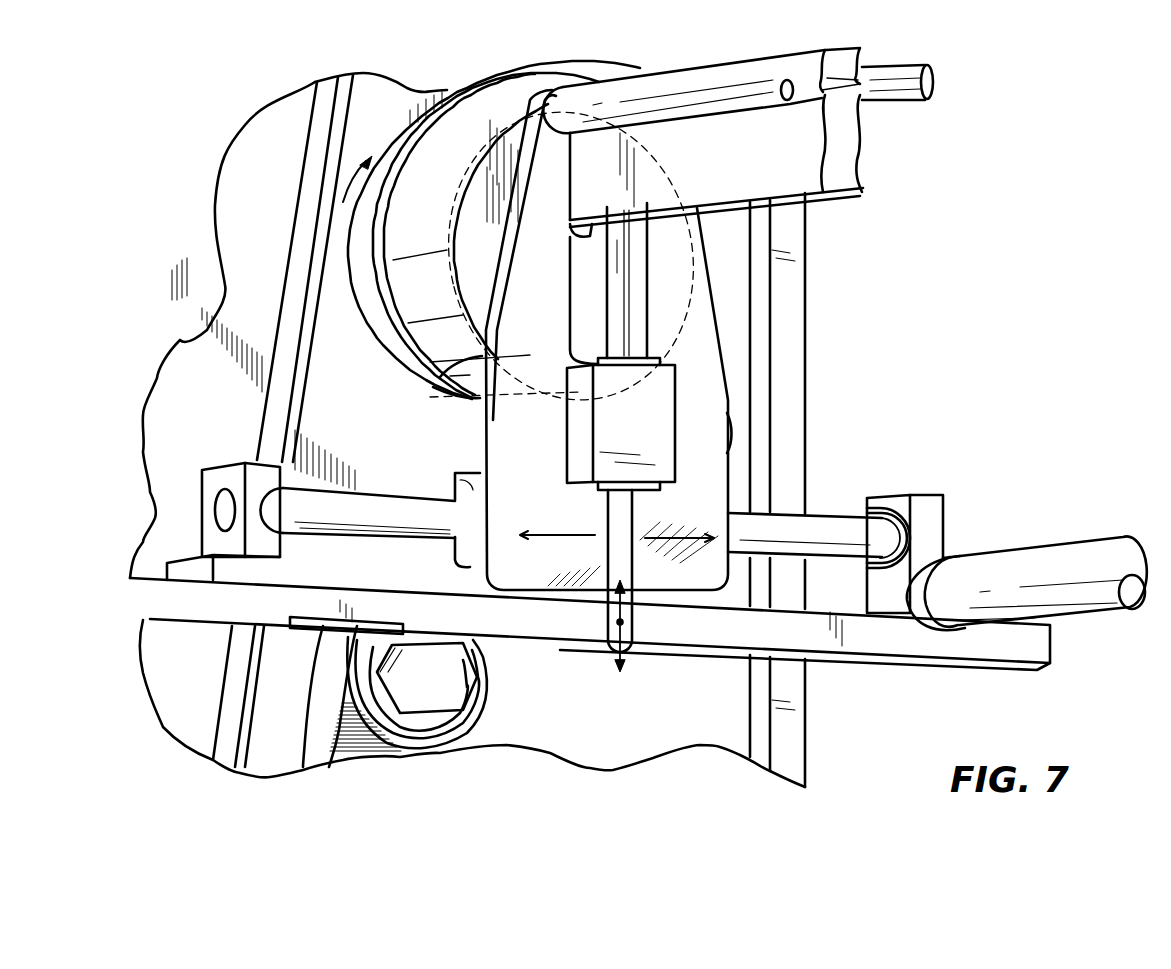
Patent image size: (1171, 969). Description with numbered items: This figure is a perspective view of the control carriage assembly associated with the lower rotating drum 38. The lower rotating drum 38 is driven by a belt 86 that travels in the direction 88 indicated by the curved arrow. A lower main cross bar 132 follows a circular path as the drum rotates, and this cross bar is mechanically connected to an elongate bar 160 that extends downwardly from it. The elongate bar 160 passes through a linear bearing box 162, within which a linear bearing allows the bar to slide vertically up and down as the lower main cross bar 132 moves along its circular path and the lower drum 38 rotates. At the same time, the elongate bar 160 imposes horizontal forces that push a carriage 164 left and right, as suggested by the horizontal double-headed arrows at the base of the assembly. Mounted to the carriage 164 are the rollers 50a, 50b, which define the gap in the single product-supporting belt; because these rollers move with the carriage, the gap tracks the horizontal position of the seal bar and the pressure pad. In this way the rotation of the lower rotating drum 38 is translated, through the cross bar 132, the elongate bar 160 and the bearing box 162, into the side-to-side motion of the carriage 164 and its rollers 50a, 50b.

The lower rotating drum 38 is at (473, 143).
The roller 50a is at (595, 103).
The roller 50b is at (905, 92).
The belt 86 is at (438, 115).
The direction 88 is at (357, 186).
The lower main cross bar 132 is at (707, 150).
The elongate bar 160 is at (620, 297).
The linear bearing box 162 is at (617, 423).
The carriage 164 is at (476, 390).